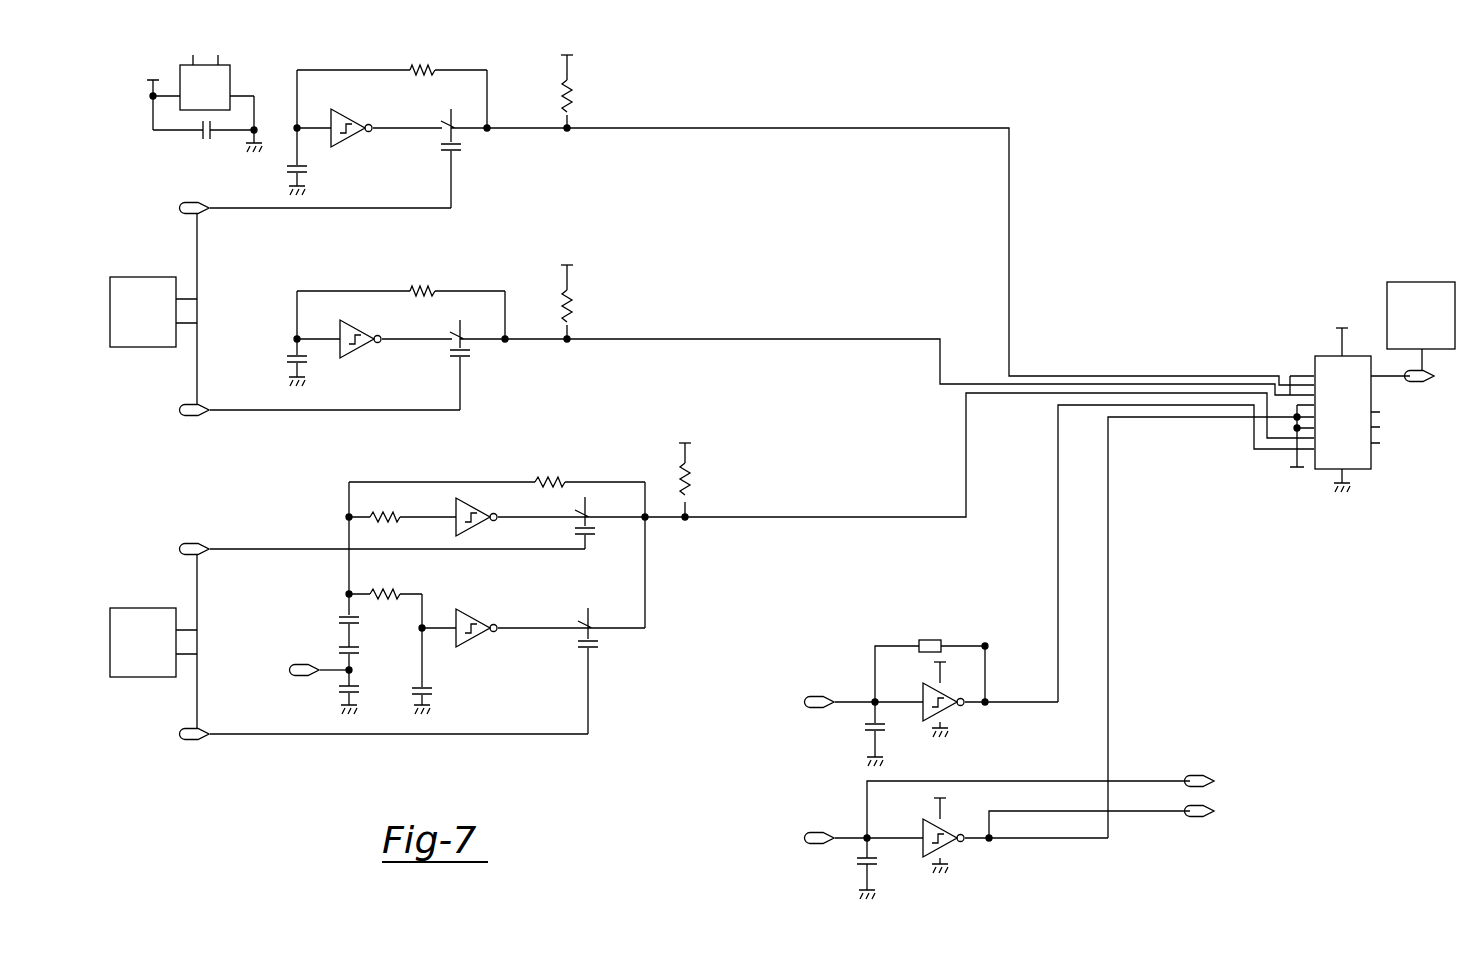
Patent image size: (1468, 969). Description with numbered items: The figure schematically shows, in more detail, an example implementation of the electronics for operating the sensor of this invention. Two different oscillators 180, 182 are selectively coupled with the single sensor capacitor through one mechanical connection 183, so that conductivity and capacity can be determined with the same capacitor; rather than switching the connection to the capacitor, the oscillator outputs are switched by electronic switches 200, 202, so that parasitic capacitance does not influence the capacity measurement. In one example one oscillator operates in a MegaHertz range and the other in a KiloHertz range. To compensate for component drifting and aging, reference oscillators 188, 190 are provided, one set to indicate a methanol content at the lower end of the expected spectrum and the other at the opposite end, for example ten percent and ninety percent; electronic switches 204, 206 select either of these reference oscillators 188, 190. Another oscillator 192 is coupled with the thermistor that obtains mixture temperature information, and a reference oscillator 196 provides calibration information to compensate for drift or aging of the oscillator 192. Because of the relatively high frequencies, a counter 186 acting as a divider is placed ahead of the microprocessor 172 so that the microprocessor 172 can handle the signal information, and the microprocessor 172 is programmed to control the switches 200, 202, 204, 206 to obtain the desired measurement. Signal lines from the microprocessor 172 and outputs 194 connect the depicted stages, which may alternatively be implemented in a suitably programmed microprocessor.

The microprocessor 172 is at (130, 336).
The oscillator 180 is at (478, 620).
The oscillator 182 is at (470, 512).
The mechanical connection 183 is at (303, 663).
The counter 186 is at (1320, 360).
The reference oscillator 188 is at (352, 110).
The reference oscillator 190 is at (362, 324).
The oscillator 192 is at (923, 828).
The output terminals 194 is at (1203, 773).
The reference oscillator 196 is at (923, 692).
The electronic switch 200 is at (593, 622).
The electronic switch 202 is at (590, 512).
The electronic switch 204 is at (468, 336).
The electronic switch 206 is at (460, 125).